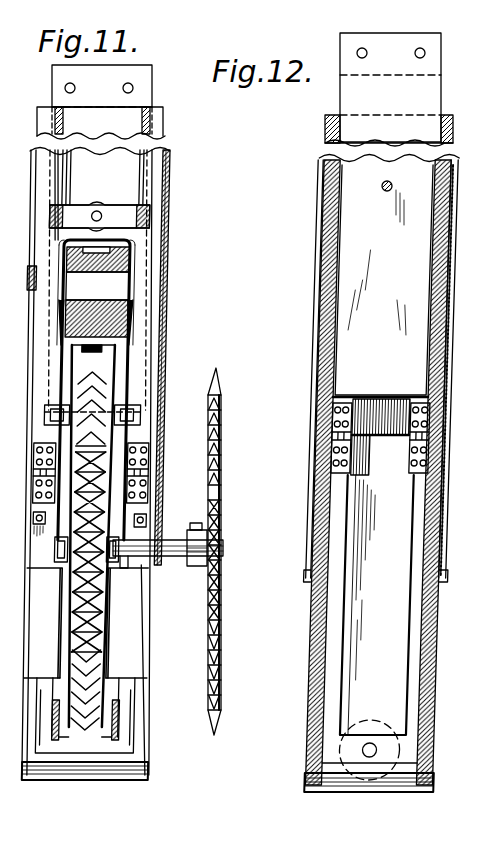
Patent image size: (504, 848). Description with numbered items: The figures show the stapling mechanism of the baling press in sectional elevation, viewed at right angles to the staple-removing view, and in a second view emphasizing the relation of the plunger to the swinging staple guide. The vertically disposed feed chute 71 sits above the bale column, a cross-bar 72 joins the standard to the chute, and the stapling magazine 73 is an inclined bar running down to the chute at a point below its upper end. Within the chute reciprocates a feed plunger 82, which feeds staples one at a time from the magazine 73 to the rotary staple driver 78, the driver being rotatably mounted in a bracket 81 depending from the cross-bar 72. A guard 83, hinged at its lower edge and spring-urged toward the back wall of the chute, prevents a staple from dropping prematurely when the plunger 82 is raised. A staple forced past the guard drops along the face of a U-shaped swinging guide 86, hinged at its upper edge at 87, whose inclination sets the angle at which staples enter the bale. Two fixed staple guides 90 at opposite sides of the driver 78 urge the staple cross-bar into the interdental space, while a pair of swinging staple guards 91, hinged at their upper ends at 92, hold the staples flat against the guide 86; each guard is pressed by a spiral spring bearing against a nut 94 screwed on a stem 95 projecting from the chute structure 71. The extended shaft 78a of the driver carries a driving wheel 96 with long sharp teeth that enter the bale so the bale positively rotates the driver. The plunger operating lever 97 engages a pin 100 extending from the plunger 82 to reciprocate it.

In FIG. 11, the feed chute 71 is at (150, 258).
In FIG. 12, the feed chute 71 is at (323, 228).
In FIG. 11, the cross-bar 72 is at (130, 320).
In FIG. 11, the stapling magazine 73 is at (98, 273).
In FIG. 11, the rotary staple driver 78 is at (93, 583).
In FIG. 11, the shaft of the driver 78a is at (170, 558).
In FIG. 11, the bracket 81 is at (120, 388).
In FIG. 11, the feed plunger 82 is at (52, 92).
In FIG. 12, the feed plunger 82 is at (389, 214).
In FIG. 11, the guard 83 is at (132, 364).
In FIG. 11, the swinging guide 86 is at (101, 740).
In FIG. 12, the swinging guide 86 is at (416, 687).
In FIG. 12, the hinge of the guide 87 is at (410, 440).
In FIG. 11, the fixed staple guides 90 is at (58, 733).
In FIG. 11, the swinging staple guards 91 is at (158, 612).
In FIG. 11, the hinge of the staple guards 92 is at (40, 472).
In FIG. 11, the nut 94 is at (150, 538).
In FIG. 11, the stem 95 is at (33, 520).
In FIG. 11, the driving wheel 96 is at (219, 393).
In FIG. 11, the plunger operating lever 97 is at (152, 219).
In FIG. 11, the pin 100 is at (97, 211).
In FIG. 12, the pin 100 is at (386, 191).